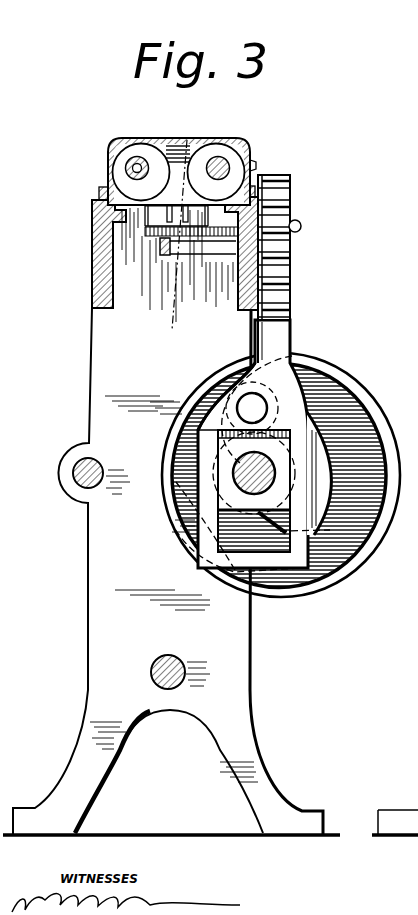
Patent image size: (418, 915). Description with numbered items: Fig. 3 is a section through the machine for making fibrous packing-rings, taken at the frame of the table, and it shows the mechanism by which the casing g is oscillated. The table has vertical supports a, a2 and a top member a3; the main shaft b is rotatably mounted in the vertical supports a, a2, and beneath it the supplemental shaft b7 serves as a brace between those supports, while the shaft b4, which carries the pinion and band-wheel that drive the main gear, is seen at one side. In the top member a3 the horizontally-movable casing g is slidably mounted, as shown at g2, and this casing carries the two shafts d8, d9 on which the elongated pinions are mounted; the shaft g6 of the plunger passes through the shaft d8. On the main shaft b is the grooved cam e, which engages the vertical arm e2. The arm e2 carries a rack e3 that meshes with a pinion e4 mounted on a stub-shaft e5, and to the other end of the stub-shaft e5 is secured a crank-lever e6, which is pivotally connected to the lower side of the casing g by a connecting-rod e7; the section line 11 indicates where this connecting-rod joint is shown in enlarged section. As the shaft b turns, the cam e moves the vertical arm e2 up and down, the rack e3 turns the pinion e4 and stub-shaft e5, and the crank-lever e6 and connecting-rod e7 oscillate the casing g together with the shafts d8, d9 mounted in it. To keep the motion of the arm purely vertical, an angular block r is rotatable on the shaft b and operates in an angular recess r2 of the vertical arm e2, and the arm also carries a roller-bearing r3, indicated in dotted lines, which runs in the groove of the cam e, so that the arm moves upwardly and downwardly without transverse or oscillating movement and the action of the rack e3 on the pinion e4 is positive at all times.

The vertical support a is at (210, 544).
The vertical support a2 is at (169, 614).
The top member a3 is at (93, 262).
The shaft b is at (241, 492).
The shaft b4 is at (108, 458).
The supplemental shaft b7 is at (151, 671).
The shaft d8 is at (133, 165).
The shaft d9 is at (222, 163).
The cam e is at (376, 397).
The vertical arm e2 is at (291, 328).
The rack e3 is at (290, 280).
The pinion e4 is at (307, 219).
The stub-shaft e5 is at (241, 265).
The crank-lever e6 is at (228, 244).
The connecting-rod e7 is at (178, 248).
The casing g is at (184, 138).
The slide mounting g2 is at (93, 214).
The shaft g6 is at (125, 168).
The angular block r is at (272, 490).
The angular recess r2 is at (208, 412).
The roller-bearing r3 is at (246, 392).
The section line 11 is at (176, 238).